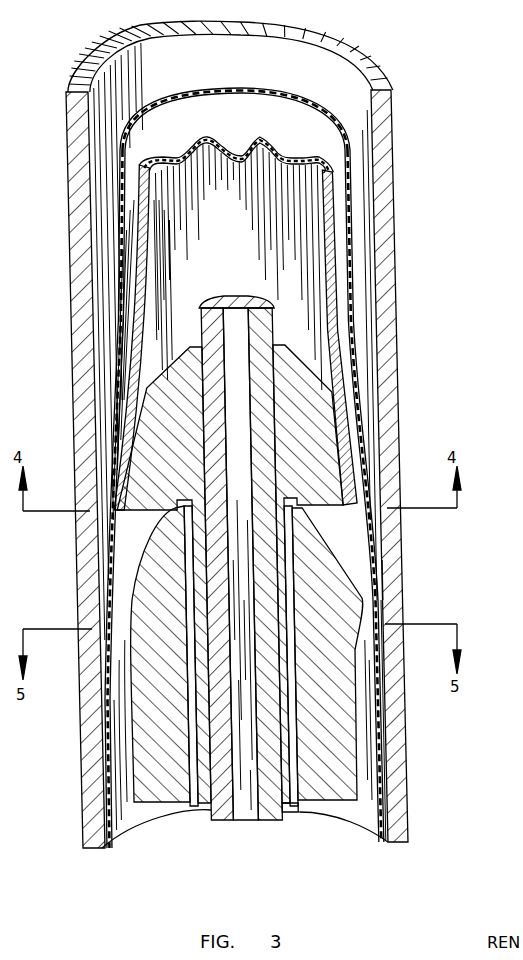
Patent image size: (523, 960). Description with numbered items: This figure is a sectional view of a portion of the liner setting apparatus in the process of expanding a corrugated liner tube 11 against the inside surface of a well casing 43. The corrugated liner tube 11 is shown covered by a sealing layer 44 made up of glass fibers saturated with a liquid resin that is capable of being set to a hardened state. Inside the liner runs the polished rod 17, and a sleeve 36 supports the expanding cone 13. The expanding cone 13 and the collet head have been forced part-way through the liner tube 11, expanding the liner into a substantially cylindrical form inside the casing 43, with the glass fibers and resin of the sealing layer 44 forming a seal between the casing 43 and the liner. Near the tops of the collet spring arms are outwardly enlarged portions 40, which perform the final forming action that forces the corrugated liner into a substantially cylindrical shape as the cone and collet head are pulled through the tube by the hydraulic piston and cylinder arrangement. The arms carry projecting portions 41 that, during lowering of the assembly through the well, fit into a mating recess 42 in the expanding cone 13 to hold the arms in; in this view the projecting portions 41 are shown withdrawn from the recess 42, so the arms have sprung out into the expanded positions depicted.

The casing 43 is at (395, 138).
The corrugated liner tube 11 is at (333, 234).
The expanding cone 13 is at (325, 375).
The sealing layer 44 is at (363, 398).
The mating recess 42 is at (297, 497).
The projecting portions 41 is at (308, 517).
The outwardly enlarged portions 40 is at (370, 622).
The polished rod 17 is at (263, 823).
The sleeve 36 is at (283, 813).